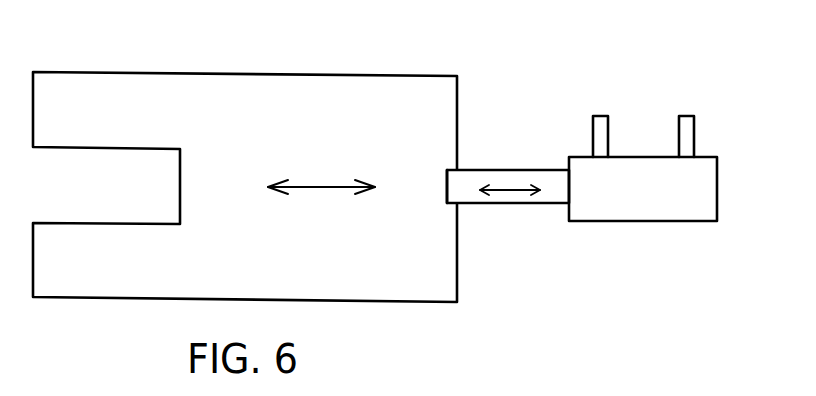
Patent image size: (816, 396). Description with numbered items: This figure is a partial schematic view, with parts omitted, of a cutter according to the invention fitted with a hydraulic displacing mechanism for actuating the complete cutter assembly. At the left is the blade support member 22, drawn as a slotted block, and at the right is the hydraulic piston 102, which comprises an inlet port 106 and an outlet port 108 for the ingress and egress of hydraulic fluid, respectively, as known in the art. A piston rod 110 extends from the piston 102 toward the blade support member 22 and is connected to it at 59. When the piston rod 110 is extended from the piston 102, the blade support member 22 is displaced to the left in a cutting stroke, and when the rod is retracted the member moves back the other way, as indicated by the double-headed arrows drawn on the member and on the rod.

The blade support member 22 is at (335, 93).
The connection point 59 is at (450, 203).
The piston 102 is at (687, 207).
The inlet port 106 is at (695, 120).
The outlet port 108 is at (610, 120).
The piston rod 110 is at (517, 205).